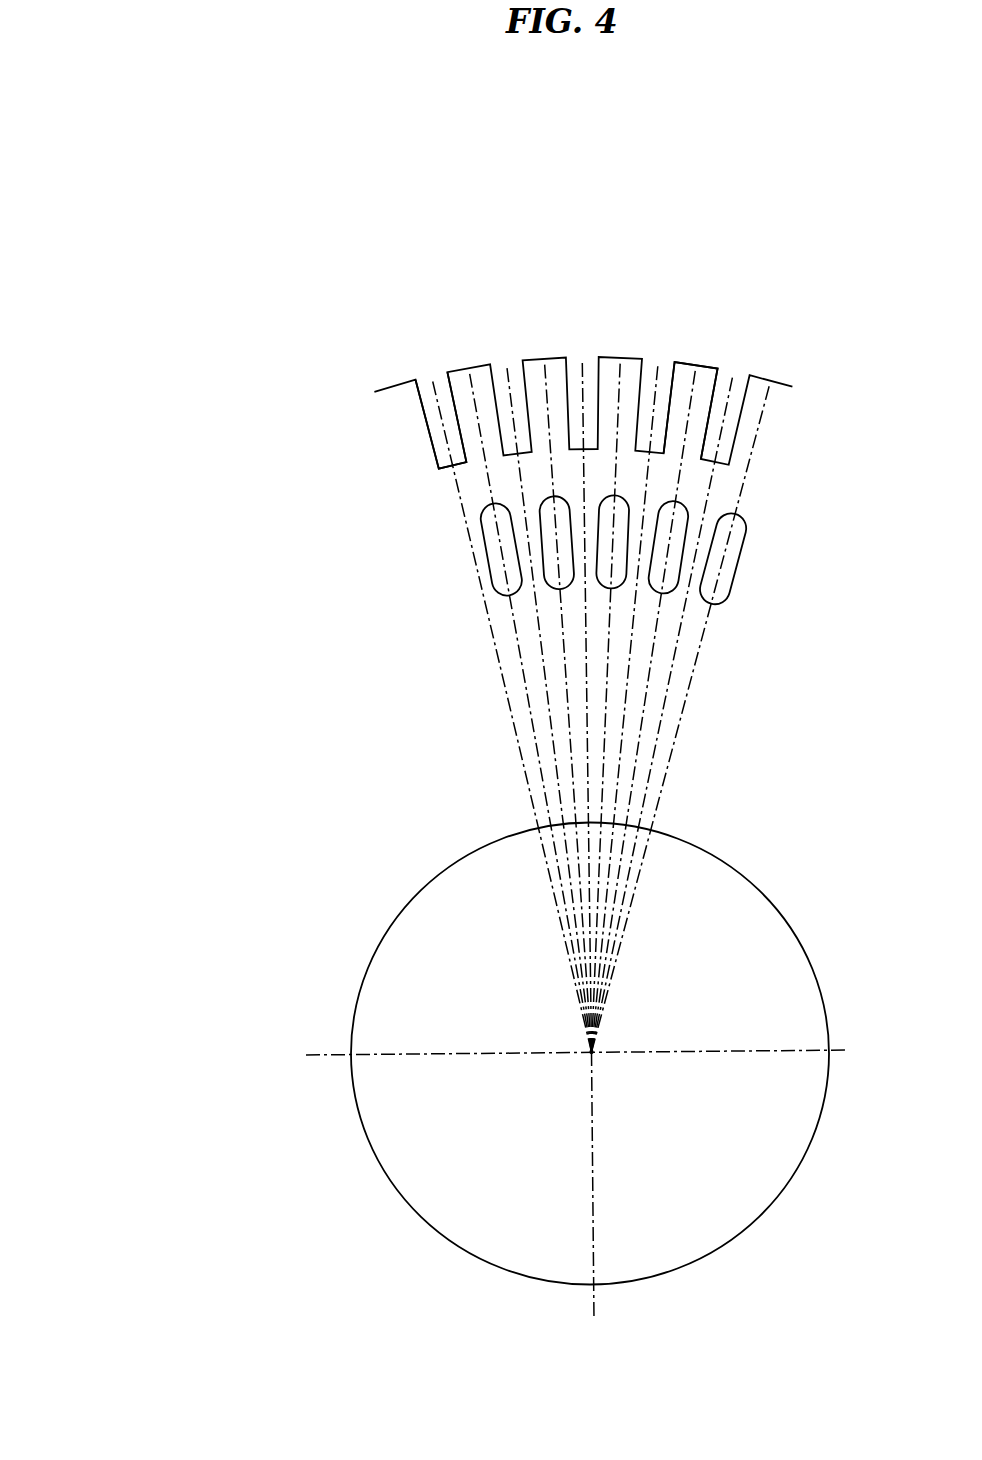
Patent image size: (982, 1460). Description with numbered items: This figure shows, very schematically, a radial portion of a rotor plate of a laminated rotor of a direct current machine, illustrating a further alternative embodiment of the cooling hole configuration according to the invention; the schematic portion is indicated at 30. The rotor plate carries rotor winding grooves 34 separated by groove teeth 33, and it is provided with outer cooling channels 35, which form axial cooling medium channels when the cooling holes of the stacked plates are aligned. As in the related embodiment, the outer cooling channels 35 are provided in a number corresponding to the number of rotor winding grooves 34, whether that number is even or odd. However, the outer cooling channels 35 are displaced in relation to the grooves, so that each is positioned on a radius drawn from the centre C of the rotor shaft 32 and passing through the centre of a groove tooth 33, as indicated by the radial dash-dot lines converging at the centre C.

The stator core 30 is at (398, 412).
The rotor shaft 32 is at (398, 978).
The groove tooth 33 is at (702, 407).
The rotor winding groove 34 is at (445, 383).
The outer cooling channel 35 is at (487, 550).
The centre of the rotor shaft C is at (592, 1052).